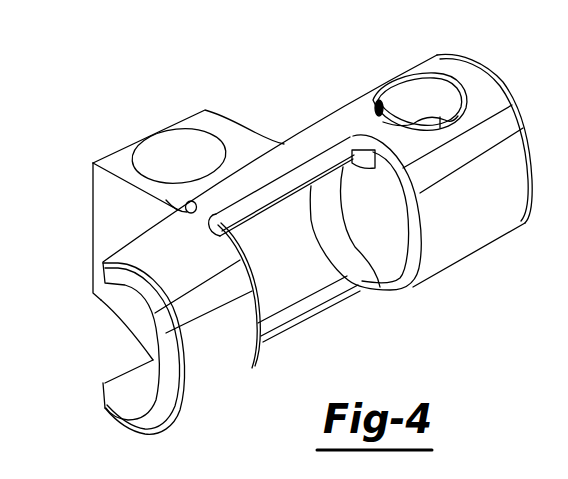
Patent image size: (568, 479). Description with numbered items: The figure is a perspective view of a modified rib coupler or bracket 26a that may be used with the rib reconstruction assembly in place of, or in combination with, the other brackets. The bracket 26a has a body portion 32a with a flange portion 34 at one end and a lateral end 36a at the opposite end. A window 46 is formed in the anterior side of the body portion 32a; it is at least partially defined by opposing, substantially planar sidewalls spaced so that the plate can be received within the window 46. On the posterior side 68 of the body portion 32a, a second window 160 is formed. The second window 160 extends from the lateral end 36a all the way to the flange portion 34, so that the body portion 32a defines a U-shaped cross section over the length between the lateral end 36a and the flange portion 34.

The bracket 26a is at (178, 170).
The flange portion 34 is at (190, 124).
The body portion 32a is at (354, 117).
The posterior side 68 is at (330, 119).
The window 46 is at (324, 338).
The second window 160 is at (137, 338).
The lateral end 36a is at (120, 413).